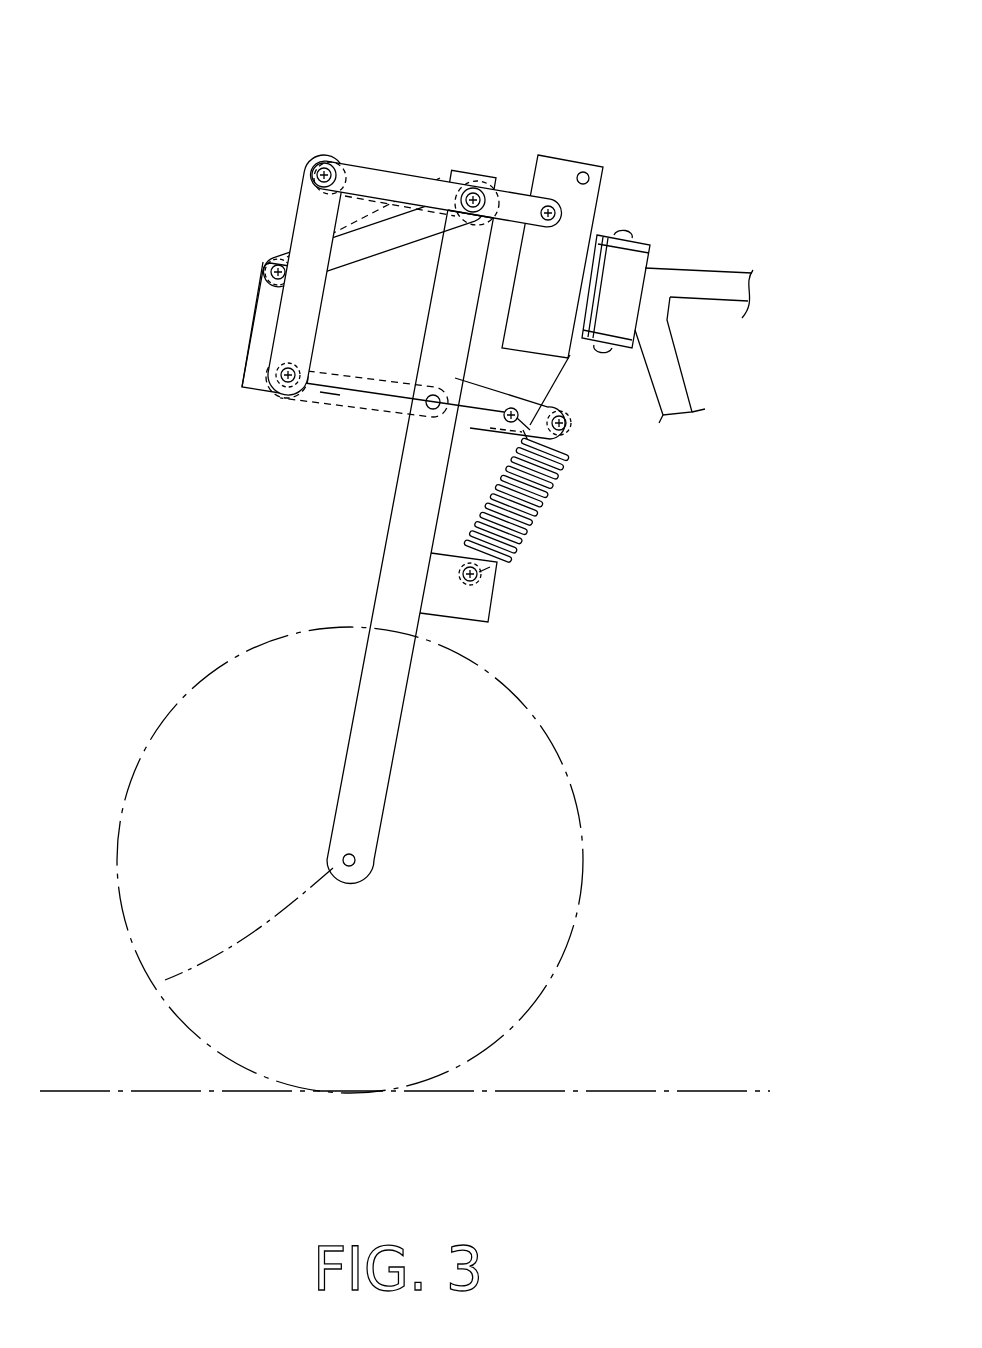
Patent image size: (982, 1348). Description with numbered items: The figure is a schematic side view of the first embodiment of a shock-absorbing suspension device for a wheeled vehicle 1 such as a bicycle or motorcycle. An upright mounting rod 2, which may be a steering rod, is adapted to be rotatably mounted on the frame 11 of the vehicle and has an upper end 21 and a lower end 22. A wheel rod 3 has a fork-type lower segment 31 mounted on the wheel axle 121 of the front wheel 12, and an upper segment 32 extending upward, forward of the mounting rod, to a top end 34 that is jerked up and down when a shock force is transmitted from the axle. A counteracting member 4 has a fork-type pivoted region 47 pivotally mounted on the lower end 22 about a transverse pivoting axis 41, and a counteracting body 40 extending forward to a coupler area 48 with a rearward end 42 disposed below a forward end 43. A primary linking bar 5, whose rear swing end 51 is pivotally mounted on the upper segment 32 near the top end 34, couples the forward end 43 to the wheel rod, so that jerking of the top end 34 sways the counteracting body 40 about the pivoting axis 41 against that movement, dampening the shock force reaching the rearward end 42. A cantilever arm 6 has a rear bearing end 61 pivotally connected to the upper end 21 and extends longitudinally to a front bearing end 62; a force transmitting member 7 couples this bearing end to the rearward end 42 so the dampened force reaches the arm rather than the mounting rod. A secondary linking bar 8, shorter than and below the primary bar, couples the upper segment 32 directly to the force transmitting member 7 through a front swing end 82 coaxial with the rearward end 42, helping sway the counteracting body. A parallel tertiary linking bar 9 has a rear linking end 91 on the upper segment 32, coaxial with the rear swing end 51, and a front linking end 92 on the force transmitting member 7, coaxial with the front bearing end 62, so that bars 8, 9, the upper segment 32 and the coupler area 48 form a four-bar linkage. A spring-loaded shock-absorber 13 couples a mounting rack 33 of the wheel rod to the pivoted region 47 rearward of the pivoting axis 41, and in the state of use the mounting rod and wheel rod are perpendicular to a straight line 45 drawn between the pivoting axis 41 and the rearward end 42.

The wheeled vehicle 1 is at (746, 250).
The frame 11 is at (704, 283).
The front wheel 12 is at (201, 1044).
The wheel axle 121 is at (165, 980).
The spring-loaded shock-absorber 13 is at (546, 503).
The mounting rod 2 is at (559, 244).
The upper end 21 is at (590, 186).
The lower end 22 is at (537, 373).
The wheel rod 3 is at (386, 540).
The fork-type lower segment 31 is at (354, 794).
The upper segment 32 is at (423, 321).
The mounting rack 33 is at (470, 598).
The top end 34 is at (479, 171).
The counteracting member 4 is at (249, 323).
The counteracting body 40 is at (338, 322).
The pivoting axis 41 is at (567, 458).
The rearward end 42 is at (267, 387).
The forward end 43 is at (292, 207).
The straight line 45 is at (320, 393).
The fork-type pivoted region 47 is at (477, 420).
The coupler area 48 is at (258, 343).
The primary linking bar 5 is at (353, 218).
The rear swing end 51 is at (484, 188).
The cantilever arm 6 is at (399, 156).
The rear bearing end 61 is at (557, 200).
The front bearing end 62 is at (318, 160).
The force transmitting member 7 is at (290, 204).
The secondary linking bar 8 is at (306, 402).
The front swing end 82 is at (268, 398).
The tertiary linking bar 9 is at (419, 188).
The rear linking end 91 is at (494, 186).
The front linking end 92 is at (333, 162).